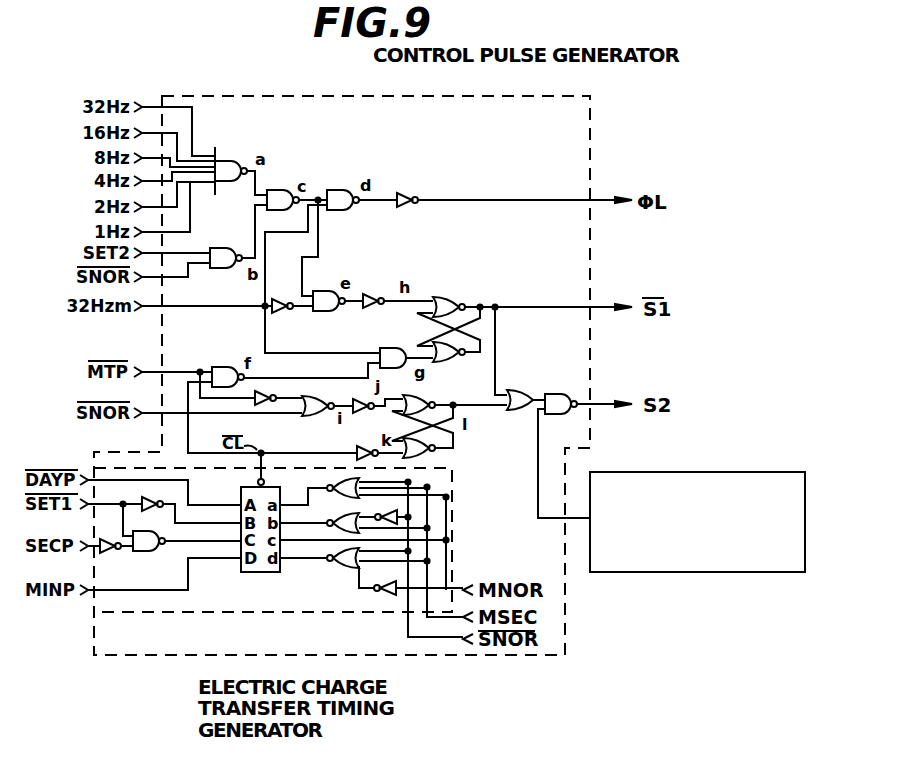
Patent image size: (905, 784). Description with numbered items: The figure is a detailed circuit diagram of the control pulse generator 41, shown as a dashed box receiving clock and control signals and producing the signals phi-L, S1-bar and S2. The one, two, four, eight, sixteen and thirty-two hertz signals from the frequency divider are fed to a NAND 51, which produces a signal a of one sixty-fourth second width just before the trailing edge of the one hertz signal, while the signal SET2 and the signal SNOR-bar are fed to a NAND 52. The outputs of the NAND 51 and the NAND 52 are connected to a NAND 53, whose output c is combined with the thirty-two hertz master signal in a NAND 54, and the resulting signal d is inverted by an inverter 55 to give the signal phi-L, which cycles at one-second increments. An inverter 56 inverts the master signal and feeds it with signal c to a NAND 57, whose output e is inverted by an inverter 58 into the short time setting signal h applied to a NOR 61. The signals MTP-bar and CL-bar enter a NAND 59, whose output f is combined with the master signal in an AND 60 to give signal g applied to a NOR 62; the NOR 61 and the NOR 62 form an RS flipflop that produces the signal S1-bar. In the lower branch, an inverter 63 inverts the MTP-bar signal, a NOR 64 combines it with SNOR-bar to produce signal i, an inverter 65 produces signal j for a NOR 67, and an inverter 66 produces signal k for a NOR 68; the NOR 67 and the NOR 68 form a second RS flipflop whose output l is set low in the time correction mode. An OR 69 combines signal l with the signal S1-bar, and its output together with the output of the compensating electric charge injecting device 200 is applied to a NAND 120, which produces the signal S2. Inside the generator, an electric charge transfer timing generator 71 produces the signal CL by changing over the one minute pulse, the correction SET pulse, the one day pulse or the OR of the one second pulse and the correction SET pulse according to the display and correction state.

The control pulse generator 41 is at (314, 96).
The NAND 51 is at (240, 147).
The NAND 52 is at (241, 238).
The NAND 53 is at (287, 190).
The NAND 54 is at (344, 190).
The inverter 55 is at (403, 194).
The inverter 56 is at (277, 312).
The NAND 57 is at (331, 290).
The inverter 58 is at (371, 308).
The NAND 59 is at (236, 358).
The AND 60 is at (401, 348).
The NOR 61 is at (452, 291).
The NOR 62 is at (428, 394).
The inverter 63 is at (262, 406).
The NOR 64 is at (309, 417).
The inverter 65 is at (361, 412).
The inverter 66 is at (357, 451).
The NOR 67 is at (461, 362).
The NOR 68 is at (432, 451).
The OR 69 is at (512, 410).
The electric charge transfer timing generator 71 is at (222, 617).
The NAND 120 is at (560, 393).
The compensating electric charge injecting device 200 is at (734, 472).